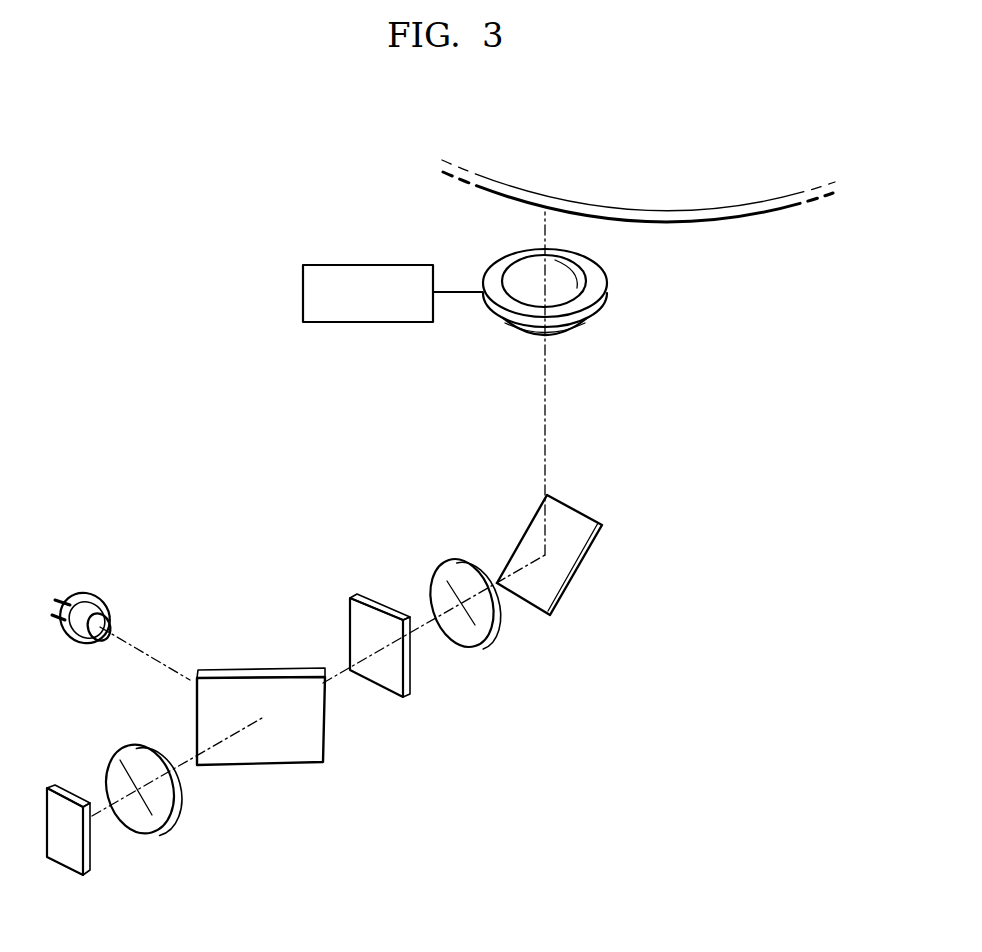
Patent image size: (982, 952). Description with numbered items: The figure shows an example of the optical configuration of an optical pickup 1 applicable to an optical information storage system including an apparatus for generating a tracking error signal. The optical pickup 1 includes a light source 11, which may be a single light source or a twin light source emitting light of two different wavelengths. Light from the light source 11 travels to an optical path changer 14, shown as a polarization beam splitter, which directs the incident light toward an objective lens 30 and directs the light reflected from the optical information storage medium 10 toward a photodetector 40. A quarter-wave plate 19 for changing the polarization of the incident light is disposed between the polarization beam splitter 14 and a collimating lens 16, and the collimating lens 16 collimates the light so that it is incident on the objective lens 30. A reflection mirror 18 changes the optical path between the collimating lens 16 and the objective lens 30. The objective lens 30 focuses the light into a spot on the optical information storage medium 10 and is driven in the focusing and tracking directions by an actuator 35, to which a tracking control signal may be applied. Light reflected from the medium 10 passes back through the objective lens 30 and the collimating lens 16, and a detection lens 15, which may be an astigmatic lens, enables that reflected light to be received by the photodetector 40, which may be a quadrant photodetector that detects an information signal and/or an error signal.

The optical pickup 1 is at (272, 523).
The optical information storage medium 10 is at (742, 193).
The light source 11 is at (100, 603).
The optical path changer 14 is at (275, 753).
The detection lens 15 is at (163, 817).
The collimating lens 16 is at (482, 633).
The reflecting mirror 18 is at (578, 547).
The quarter-wave plate 19 is at (398, 685).
The objective lens 30 is at (580, 288).
The actuator 35 is at (368, 322).
The photodetector 40 is at (78, 865).